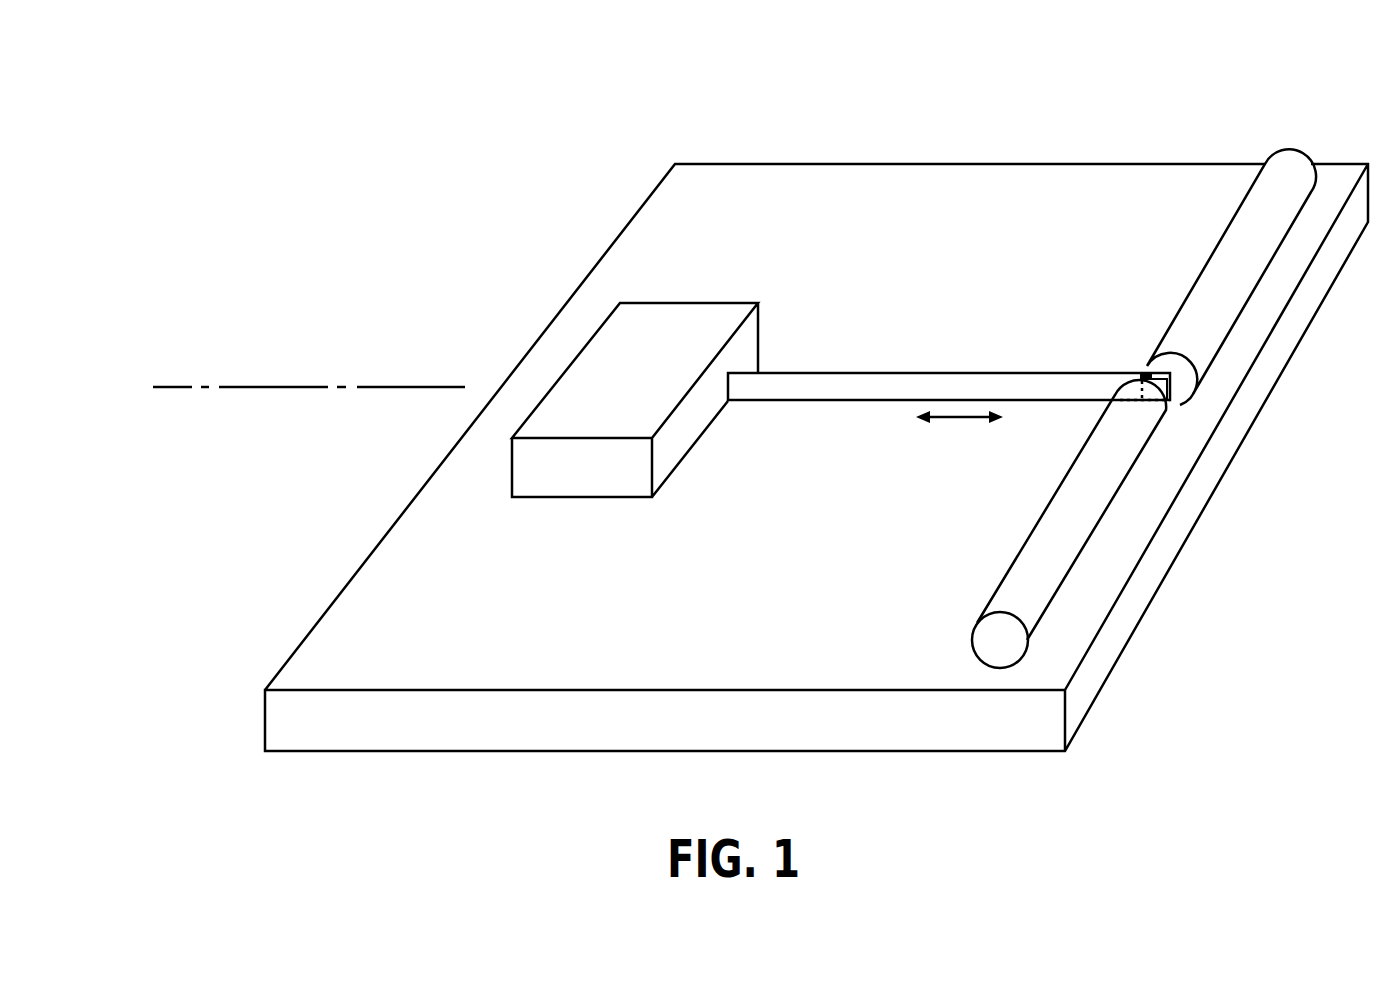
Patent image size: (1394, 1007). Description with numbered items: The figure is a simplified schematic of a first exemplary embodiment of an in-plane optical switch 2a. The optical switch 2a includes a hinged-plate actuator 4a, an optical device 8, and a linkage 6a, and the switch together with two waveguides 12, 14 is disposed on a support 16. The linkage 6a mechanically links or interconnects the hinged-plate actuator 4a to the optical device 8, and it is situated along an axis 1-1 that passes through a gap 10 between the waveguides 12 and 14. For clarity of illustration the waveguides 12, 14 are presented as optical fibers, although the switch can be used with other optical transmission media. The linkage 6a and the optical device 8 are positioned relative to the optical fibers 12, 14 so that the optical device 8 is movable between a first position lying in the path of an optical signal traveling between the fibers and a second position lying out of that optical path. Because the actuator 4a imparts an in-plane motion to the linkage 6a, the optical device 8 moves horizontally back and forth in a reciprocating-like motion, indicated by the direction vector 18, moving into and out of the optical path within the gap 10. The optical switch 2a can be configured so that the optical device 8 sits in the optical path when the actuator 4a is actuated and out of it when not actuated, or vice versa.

The in-plane optical switch 2a is at (1046, 94).
The hinged-plate actuator 4a is at (645, 398).
The linkage 6a is at (927, 383).
The optical device 8 is at (1152, 388).
The gap 10 is at (1142, 372).
The waveguide 12 is at (1092, 533).
The waveguide 14 is at (1234, 308).
The support 16 is at (638, 588).
The direction vector 18 is at (950, 421).
The axis 1-1 is at (275, 387).